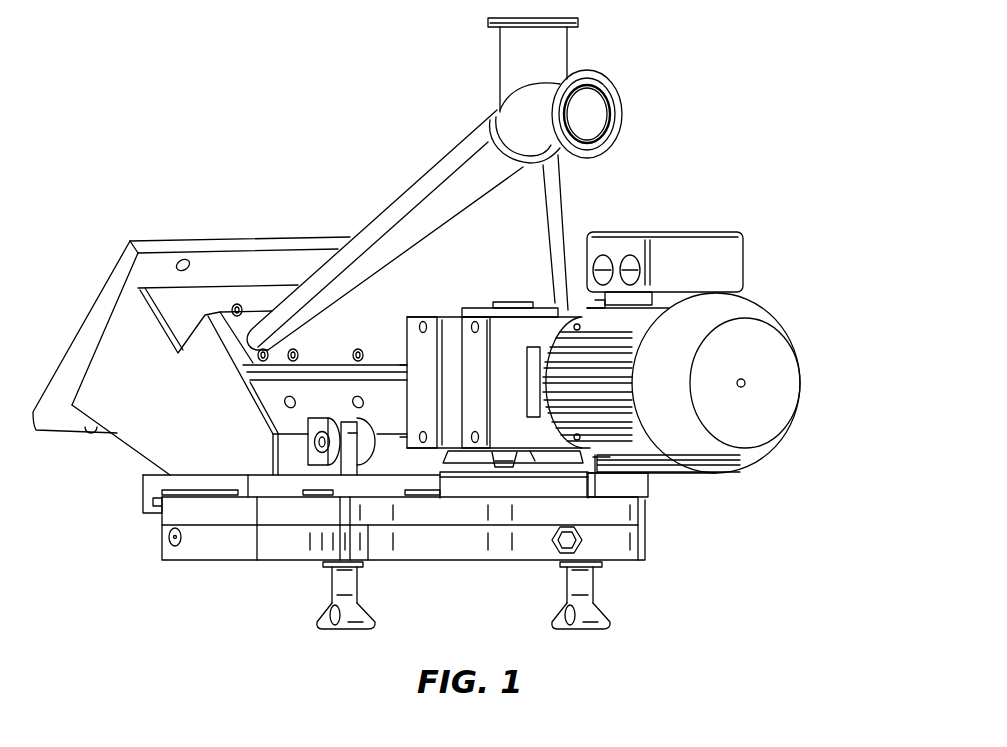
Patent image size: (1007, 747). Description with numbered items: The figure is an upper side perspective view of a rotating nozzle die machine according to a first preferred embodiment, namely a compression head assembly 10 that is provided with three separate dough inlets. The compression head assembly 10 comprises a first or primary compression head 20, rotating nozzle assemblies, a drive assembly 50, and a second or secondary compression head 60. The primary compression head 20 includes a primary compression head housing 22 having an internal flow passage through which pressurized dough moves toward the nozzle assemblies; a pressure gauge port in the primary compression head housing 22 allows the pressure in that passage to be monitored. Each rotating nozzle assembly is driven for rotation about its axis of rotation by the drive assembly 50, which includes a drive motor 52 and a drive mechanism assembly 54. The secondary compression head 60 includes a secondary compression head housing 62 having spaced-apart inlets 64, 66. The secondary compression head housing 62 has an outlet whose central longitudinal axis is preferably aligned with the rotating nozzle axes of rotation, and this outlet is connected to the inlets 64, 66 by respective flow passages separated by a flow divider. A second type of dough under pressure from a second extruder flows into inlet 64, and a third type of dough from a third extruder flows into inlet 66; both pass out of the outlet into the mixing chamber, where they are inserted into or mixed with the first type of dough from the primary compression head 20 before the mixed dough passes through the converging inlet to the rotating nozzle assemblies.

The compression head assembly 10 is at (225, 62).
The primary compression head 20 is at (127, 460).
The primary compression head housing 22 is at (130, 433).
The drive assembly 50 is at (812, 402).
The drive motor 52 is at (787, 383).
The drive mechanism assembly 54 is at (653, 537).
The secondary compression head 60 is at (378, 204).
The secondary compression head housing 62 is at (462, 178).
The inlet 64 is at (595, 117).
The inlet 66 is at (558, 60).